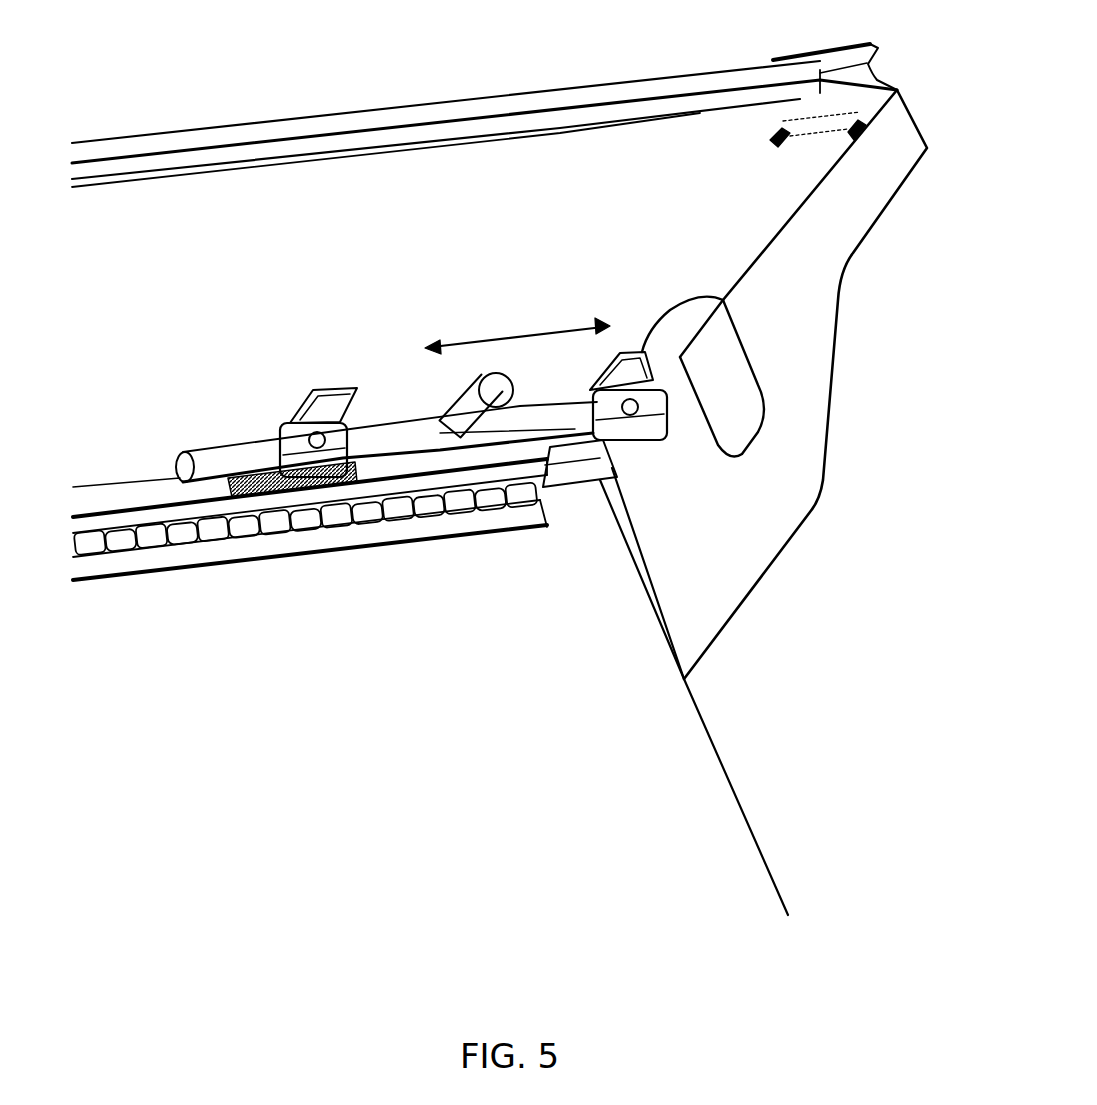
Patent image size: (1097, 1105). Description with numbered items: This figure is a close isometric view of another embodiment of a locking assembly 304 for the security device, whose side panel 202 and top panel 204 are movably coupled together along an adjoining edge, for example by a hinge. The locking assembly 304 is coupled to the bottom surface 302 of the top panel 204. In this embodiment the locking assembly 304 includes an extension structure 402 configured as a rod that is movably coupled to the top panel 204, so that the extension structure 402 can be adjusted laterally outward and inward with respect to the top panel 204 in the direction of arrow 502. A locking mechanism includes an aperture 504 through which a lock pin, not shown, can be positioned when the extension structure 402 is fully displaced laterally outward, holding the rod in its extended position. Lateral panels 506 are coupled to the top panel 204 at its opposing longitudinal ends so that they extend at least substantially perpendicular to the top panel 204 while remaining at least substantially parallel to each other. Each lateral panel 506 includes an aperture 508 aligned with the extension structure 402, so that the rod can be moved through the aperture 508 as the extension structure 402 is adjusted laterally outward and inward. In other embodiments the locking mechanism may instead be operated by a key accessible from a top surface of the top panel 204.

The side panel 202 is at (759, 854).
The top panel 204 is at (223, 128).
The bottom surface 302 is at (515, 172).
The locking assembly 304 is at (258, 336).
The extension structure 402 is at (223, 447).
The arrow 502 is at (506, 333).
The aperture 504 is at (320, 440).
The lateral panel 506 is at (765, 569).
The aperture 508 is at (663, 440).